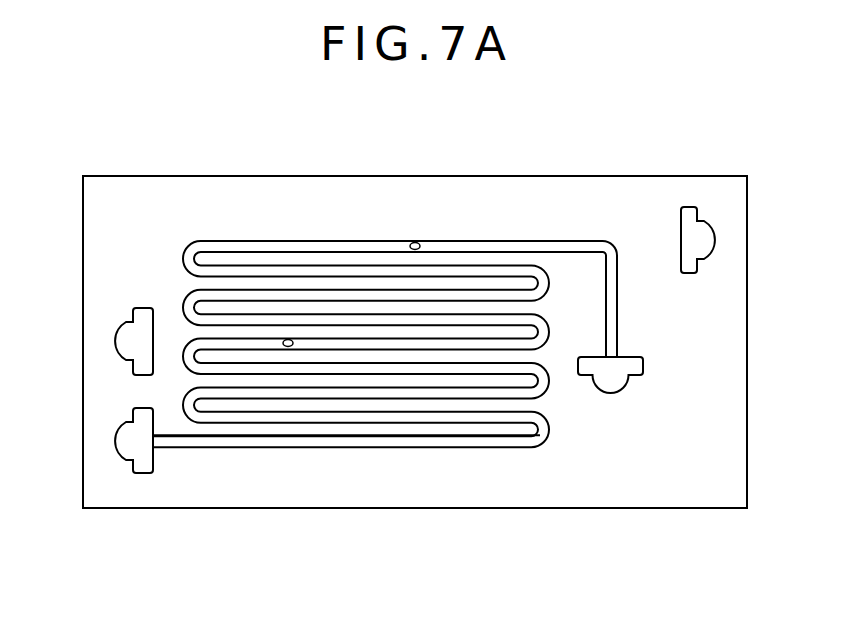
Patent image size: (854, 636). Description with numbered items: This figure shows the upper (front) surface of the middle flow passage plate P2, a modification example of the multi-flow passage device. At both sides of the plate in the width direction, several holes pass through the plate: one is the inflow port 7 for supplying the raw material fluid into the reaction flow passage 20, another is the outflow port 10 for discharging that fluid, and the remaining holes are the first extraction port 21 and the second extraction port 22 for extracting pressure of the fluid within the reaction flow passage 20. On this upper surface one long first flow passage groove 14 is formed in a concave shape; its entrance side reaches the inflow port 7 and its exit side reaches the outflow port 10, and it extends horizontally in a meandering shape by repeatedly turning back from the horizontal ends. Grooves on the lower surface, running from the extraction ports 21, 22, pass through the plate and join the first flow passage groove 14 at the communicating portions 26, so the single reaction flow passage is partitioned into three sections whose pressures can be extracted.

The middle flow passage plate P2 is at (534, 166).
The reaction flow passage 20 is at (377, 448).
The first flow passage groove 14 is at (452, 441).
The inflow port 7 is at (149, 470).
The first extraction port 21 is at (150, 364).
The second extraction port 22 is at (684, 214).
The outflow port 10 is at (611, 392).
The communicating portion 26 is at (415, 242).